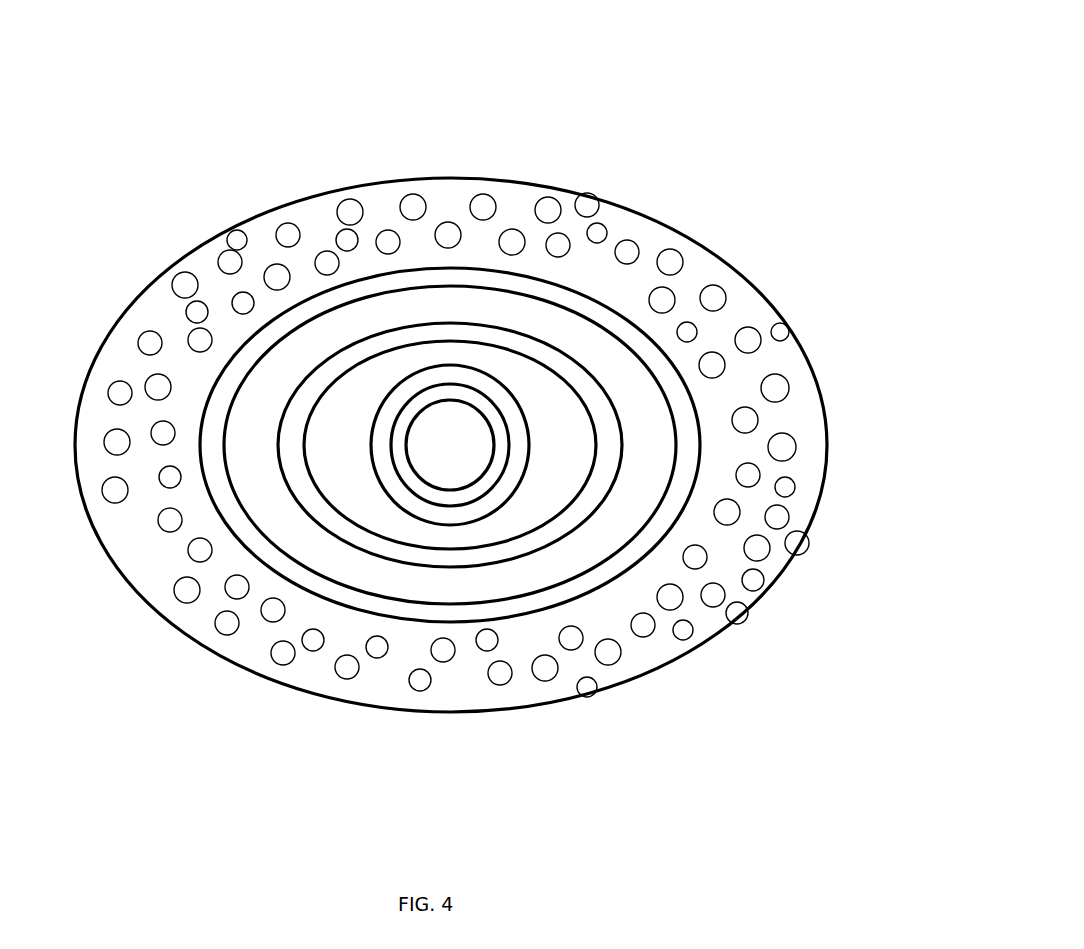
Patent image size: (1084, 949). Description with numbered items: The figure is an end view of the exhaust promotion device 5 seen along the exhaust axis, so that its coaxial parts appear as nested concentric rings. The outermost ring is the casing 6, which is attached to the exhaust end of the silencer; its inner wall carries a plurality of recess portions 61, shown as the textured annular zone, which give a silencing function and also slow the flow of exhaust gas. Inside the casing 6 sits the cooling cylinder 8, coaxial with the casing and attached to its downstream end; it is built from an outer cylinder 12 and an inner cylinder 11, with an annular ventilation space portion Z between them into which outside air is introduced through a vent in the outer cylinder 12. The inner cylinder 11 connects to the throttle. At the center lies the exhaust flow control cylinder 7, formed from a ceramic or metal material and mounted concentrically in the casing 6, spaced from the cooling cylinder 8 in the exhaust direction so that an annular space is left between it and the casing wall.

The exhaust promotion device 5 is at (808, 318).
The casing 6 is at (417, 177).
The recess portions 61 is at (187, 303).
The cooling cylinder 8 is at (573, 287).
The outer cylinder 12 is at (703, 483).
The inner cylinder 11 is at (600, 507).
The ventilation space portion Z is at (559, 557).
The exhaust flow control cylinder 7 is at (402, 512).